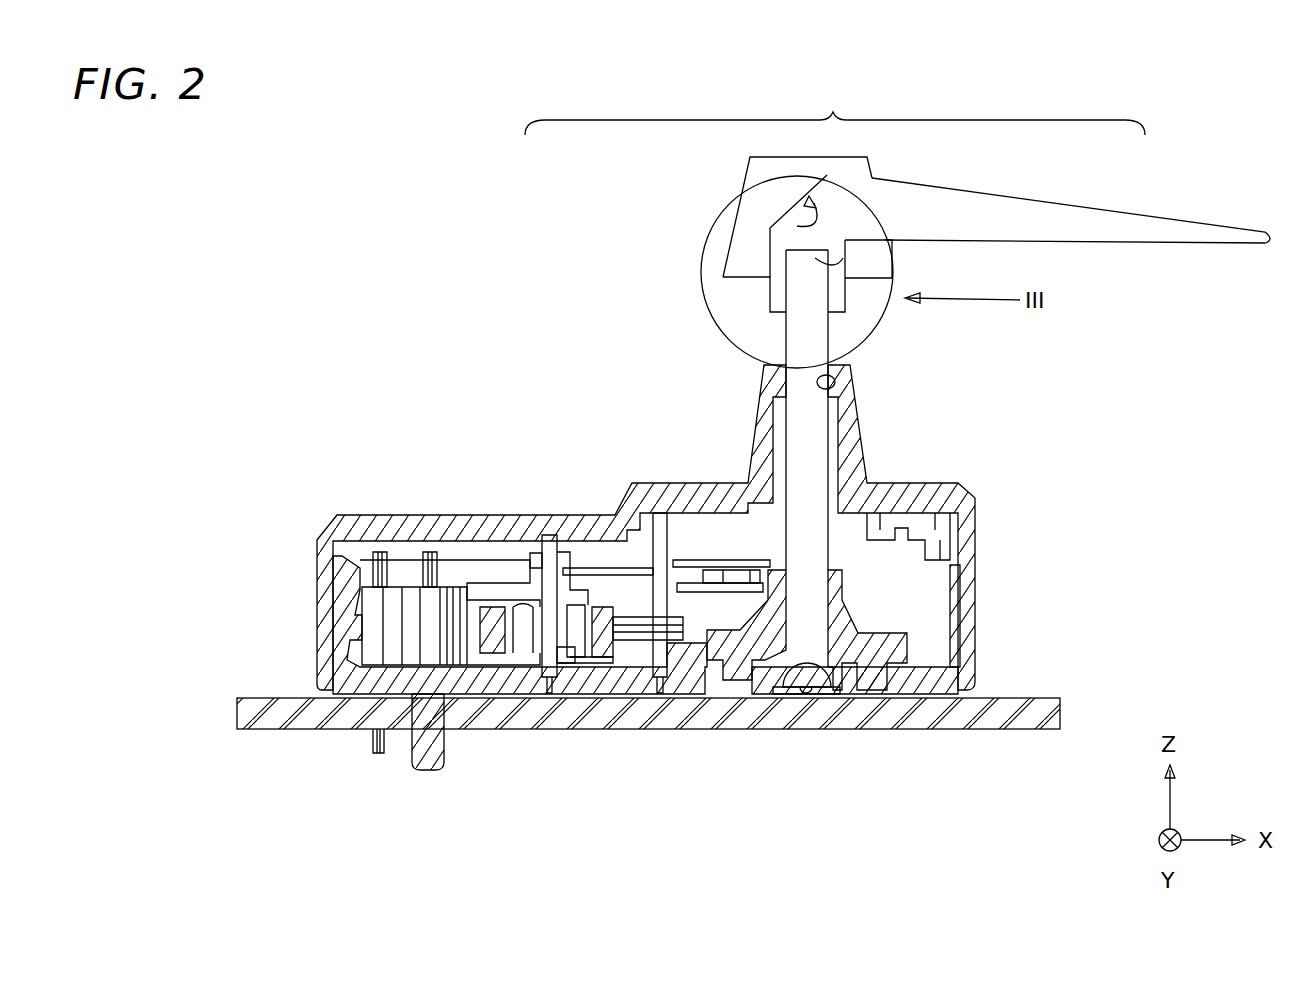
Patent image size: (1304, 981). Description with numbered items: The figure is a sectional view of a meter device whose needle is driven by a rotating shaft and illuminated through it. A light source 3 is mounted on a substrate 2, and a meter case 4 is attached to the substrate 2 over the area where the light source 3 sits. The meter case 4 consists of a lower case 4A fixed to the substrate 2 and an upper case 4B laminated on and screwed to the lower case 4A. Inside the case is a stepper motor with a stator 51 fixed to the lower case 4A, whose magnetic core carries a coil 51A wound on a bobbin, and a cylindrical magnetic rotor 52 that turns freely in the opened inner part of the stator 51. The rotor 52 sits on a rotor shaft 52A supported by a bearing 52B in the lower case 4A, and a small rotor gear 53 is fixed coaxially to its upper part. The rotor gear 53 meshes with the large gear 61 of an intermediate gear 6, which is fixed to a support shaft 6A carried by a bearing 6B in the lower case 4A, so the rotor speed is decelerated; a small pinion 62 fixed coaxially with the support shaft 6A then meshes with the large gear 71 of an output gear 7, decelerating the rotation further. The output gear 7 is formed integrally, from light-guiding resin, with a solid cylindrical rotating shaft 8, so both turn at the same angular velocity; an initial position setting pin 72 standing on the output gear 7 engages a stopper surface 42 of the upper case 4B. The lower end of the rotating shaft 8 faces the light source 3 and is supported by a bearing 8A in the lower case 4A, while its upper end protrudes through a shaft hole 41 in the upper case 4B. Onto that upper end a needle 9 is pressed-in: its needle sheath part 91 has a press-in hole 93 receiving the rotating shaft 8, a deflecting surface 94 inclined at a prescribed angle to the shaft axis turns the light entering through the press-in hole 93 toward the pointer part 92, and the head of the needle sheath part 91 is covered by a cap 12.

The substrate 2 is at (1020, 712).
The light source 3 is at (808, 668).
The meter case 4 is at (555, 529).
The lower case 4A is at (572, 625).
The upper case 4B is at (317, 537).
The intermediate gear 6 is at (603, 590).
The support shaft 6A is at (662, 662).
The bearing 6B is at (687, 660).
The output gear 7 is at (722, 602).
The large gear 71 is at (682, 600).
The initial position setting pin 72 is at (907, 530).
The rotating shaft 8 is at (818, 455).
The bearing 8A is at (748, 640).
The needle 9 is at (835, 109).
The needle sheath part 91 is at (775, 253).
The pointer part 92 is at (1075, 220).
The press-in hole 93 is at (843, 258).
The deflecting surface 94 is at (778, 253).
The cap 12 is at (738, 262).
The shaft hole 41 is at (835, 382).
The stopper surface 42 is at (935, 523).
The stator 51 is at (623, 643).
The coil 51A is at (413, 608).
The rotor 52 is at (500, 597).
The rotor shaft 52A is at (543, 668).
The bearing 52B is at (563, 660).
The rotor gear 53 is at (525, 600).
The large gear 61 is at (570, 600).
The pinion 62 is at (612, 628).